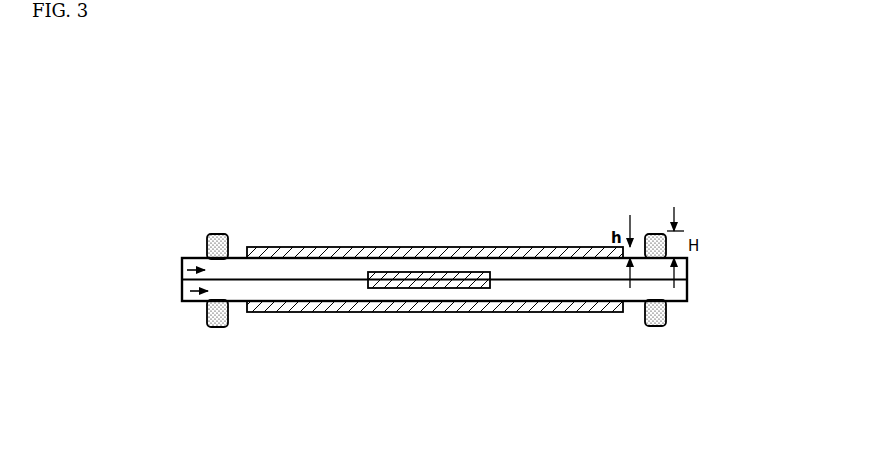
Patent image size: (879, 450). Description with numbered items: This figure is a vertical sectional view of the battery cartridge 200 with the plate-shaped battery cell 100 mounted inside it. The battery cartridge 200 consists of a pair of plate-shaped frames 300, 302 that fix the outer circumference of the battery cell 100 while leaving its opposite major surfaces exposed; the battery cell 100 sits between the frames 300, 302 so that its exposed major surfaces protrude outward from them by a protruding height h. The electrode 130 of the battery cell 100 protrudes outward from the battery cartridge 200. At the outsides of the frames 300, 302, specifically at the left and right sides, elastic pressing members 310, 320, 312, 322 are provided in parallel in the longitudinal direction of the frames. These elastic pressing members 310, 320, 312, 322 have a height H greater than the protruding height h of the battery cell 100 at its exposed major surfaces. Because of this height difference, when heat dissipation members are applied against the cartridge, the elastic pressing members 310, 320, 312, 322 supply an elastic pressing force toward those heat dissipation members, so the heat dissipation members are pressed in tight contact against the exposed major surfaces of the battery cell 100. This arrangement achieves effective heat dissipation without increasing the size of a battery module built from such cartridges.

The battery cartridge 200 is at (102, 108).
The plate-shaped battery cell 100 is at (576, 244).
The electrode 130 is at (434, 283).
The plate-shaped frame 300 is at (186, 270).
The plate-shaped frame 302 is at (189, 291).
The elastic pressing member 310 is at (208, 236).
The elastic pressing member 312 is at (218, 317).
The elastic pressing member 320 is at (649, 238).
The elastic pressing member 322 is at (657, 308).